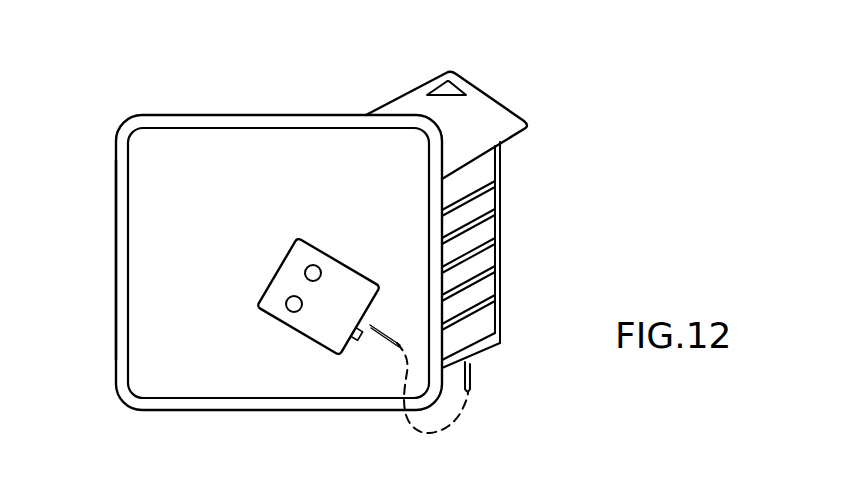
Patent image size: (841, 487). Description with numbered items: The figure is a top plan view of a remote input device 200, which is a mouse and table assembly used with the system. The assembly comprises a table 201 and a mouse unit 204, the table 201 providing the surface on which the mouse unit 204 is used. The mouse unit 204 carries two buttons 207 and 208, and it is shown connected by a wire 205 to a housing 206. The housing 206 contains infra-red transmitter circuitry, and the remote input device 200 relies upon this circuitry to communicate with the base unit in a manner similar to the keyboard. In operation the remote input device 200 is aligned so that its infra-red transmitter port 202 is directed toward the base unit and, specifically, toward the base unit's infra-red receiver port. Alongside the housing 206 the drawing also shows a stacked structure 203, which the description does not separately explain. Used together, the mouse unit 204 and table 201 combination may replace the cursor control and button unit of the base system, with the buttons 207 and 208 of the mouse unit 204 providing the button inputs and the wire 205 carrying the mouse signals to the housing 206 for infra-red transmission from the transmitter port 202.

The remote input device 200 is at (278, 116).
The table 201 is at (177, 146).
The infra-red transmitter port 202 is at (448, 72).
The stack of plates 203 is at (503, 251).
The mouse unit 204 is at (318, 350).
The wire 205 is at (430, 435).
The housing 206 is at (121, 210).
The button 207 is at (305, 268).
The button 208 is at (287, 307).